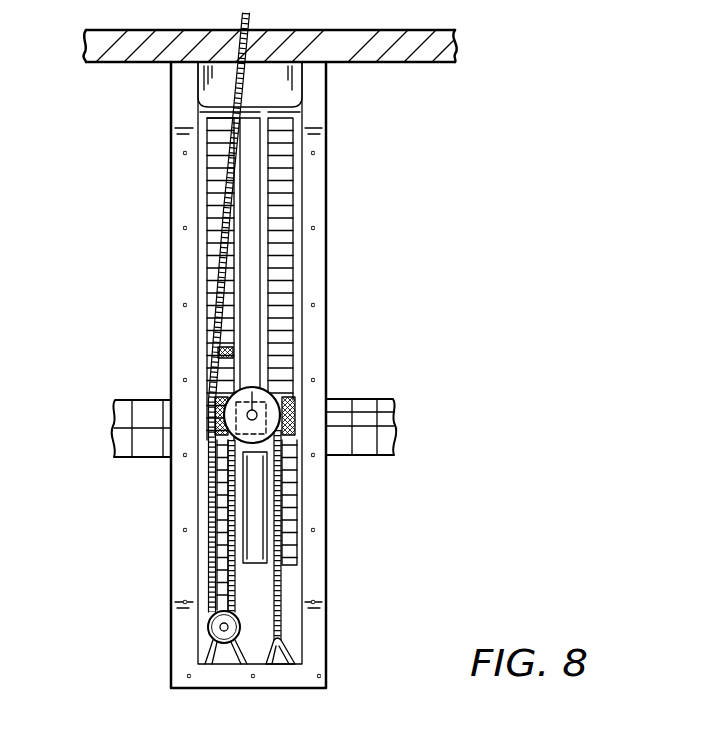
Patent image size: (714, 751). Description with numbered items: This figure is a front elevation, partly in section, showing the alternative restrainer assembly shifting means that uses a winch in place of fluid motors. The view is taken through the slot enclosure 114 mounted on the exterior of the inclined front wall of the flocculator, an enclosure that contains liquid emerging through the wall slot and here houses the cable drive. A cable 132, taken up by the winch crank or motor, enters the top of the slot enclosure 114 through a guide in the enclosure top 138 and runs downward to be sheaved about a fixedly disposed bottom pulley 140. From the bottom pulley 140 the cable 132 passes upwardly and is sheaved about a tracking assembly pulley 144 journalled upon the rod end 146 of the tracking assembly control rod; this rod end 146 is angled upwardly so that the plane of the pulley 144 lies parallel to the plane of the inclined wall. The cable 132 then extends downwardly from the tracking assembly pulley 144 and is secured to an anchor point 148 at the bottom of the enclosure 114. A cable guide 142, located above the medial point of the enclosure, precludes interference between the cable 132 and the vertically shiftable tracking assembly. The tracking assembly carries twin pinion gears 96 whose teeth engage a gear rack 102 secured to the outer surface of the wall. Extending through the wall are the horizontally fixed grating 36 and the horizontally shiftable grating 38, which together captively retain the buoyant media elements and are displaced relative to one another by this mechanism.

The grating 36 is at (383, 440).
The grating 38 is at (387, 413).
The pinion gear 96 is at (223, 436).
The gear rack 102 is at (208, 165).
The slot enclosure 114 is at (326, 243).
The cable 132 is at (290, 77).
The enclosure top 138 is at (216, 86).
The bottom pulley 140 is at (214, 626).
The cable guide 142 is at (235, 353).
The tracking assembly pulley 144 is at (245, 395).
The rod end 146 is at (258, 394).
The anchor point 148 is at (288, 650).